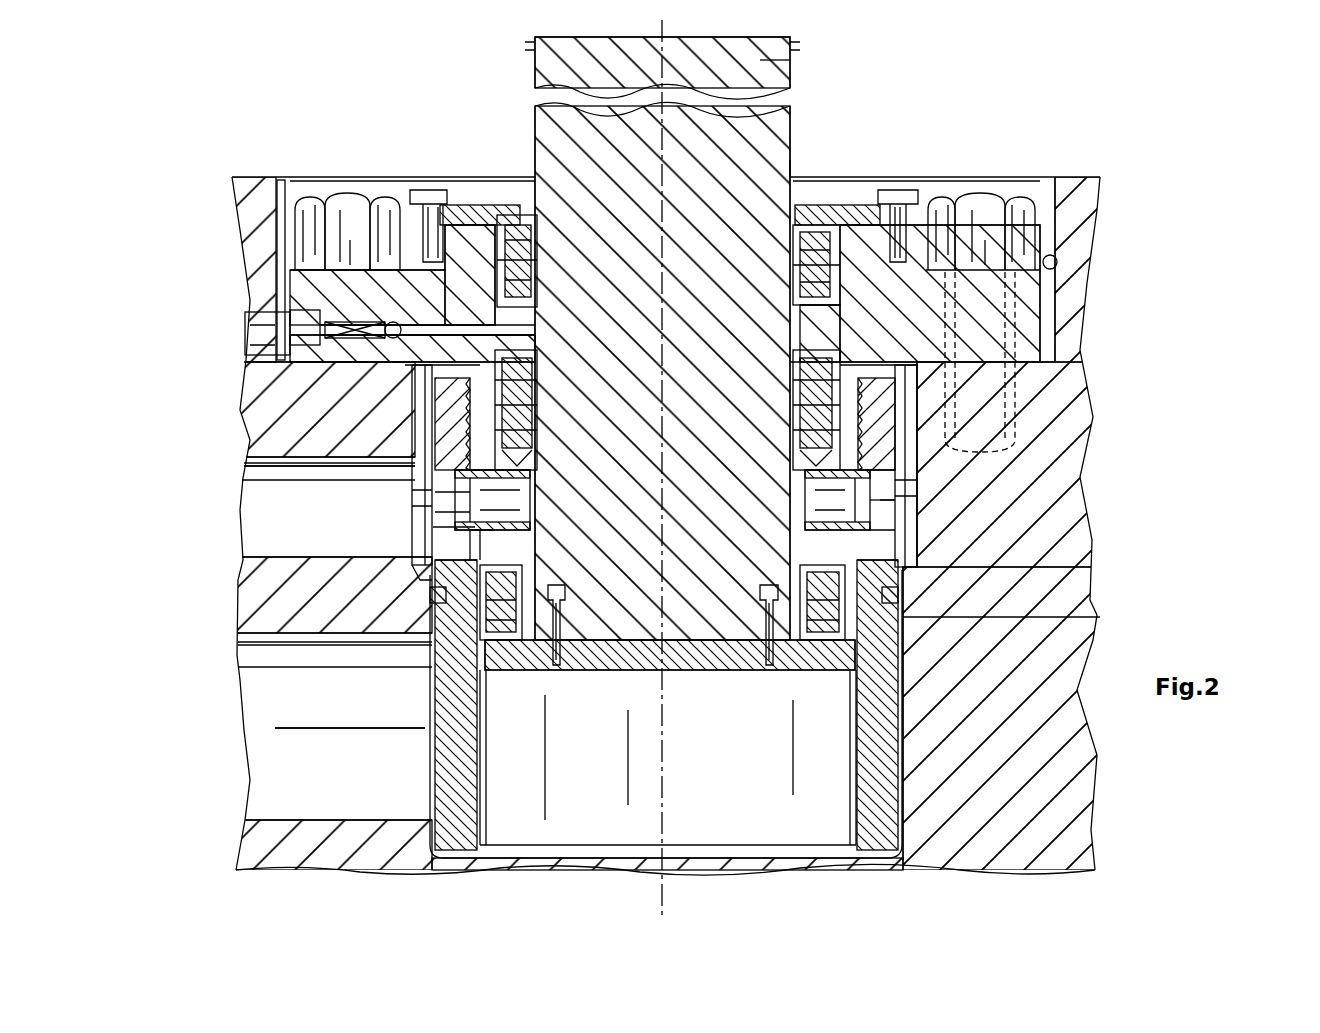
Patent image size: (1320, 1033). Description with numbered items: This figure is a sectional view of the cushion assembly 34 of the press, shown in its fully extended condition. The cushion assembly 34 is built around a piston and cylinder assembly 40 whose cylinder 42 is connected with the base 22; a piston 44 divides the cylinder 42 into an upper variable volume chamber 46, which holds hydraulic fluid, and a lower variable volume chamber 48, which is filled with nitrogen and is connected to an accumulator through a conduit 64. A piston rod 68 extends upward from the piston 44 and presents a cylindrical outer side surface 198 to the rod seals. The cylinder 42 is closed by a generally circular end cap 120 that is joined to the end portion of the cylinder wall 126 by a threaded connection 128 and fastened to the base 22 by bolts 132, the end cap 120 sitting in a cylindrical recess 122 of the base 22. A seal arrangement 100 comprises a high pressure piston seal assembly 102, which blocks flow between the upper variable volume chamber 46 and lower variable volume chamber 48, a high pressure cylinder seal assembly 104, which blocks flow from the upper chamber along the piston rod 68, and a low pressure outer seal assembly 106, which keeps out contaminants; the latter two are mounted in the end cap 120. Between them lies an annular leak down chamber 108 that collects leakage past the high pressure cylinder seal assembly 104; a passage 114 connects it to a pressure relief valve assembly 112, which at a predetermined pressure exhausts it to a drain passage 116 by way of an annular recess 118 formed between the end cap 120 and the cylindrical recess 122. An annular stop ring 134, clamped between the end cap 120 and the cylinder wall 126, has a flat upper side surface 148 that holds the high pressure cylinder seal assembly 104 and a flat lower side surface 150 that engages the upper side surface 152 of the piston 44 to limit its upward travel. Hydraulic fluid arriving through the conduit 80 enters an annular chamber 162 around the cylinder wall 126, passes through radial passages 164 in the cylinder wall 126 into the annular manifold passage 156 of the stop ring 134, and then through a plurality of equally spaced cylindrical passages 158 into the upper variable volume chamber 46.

The base 22 is at (1060, 843).
The cushion assembly 34 is at (404, 108).
The piston and cylinder assembly 40 is at (518, 155).
The cylinder 42 is at (455, 854).
The piston 44 is at (730, 658).
The upper variable volume chamber 46 is at (540, 498).
The lower variable volume chamber 48 is at (736, 850).
The conduit 64 is at (322, 788).
The piston rod 68 is at (790, 84).
The conduit 80 is at (258, 543).
The seal arrangement 100 is at (892, 436).
The high pressure piston seal assembly 102 is at (862, 619).
The high pressure cylinder seal assembly 104 is at (842, 403).
The low pressure outer seal assembly 106 is at (826, 215).
The annular leak down chamber 108 is at (530, 326).
The pressure relief valve assembly 112 is at (316, 328).
The passage 114 is at (446, 332).
The drain passage 116 is at (262, 326).
The annular recess 118 is at (282, 283).
The end cap 120 is at (1000, 268).
The cylindrical recess 122 is at (1058, 262).
The cylinder wall 126 is at (596, 848).
The threaded connection 128 is at (448, 438).
The bolts 132 is at (350, 215).
The stop ring 134 is at (803, 516).
The upper side surface 148 is at (514, 470).
The lower side surface 150 is at (470, 528).
The upper side surface 152 is at (532, 522).
The annular manifold passage 156 is at (890, 512).
The cylindrical passages 158 is at (512, 514).
The annular chamber 162 is at (418, 500).
The radial passages 164 is at (450, 507).
The outer side surface 198 is at (800, 157).